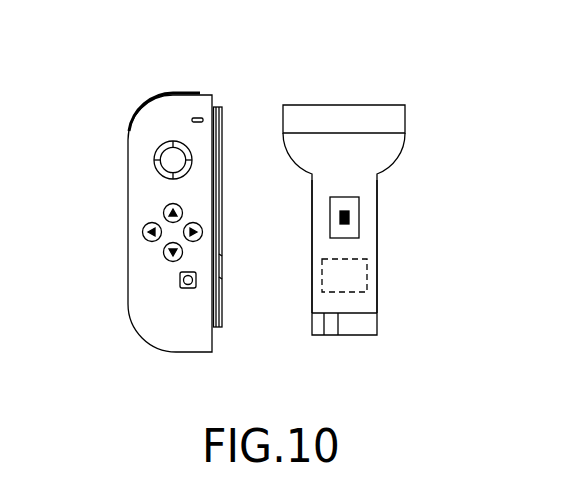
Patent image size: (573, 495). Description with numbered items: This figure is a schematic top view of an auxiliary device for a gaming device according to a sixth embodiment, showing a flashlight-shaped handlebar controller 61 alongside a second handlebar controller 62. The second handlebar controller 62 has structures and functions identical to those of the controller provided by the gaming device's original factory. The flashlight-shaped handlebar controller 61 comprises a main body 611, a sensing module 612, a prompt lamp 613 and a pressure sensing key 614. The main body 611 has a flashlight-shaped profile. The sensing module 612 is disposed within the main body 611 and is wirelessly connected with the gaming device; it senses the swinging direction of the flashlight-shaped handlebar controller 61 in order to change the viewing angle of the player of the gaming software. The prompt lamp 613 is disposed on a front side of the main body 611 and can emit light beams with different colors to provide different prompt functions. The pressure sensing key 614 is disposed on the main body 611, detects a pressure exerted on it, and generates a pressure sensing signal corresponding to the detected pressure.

The second handlebar controller 62 is at (150, 93).
The flashlight-shaped handlebar controller 61 is at (387, 88).
The main body 611 is at (368, 225).
The sensing module 612 is at (357, 277).
The prompt lamp 613 is at (333, 325).
The pressure sensing key 614 is at (340, 217).